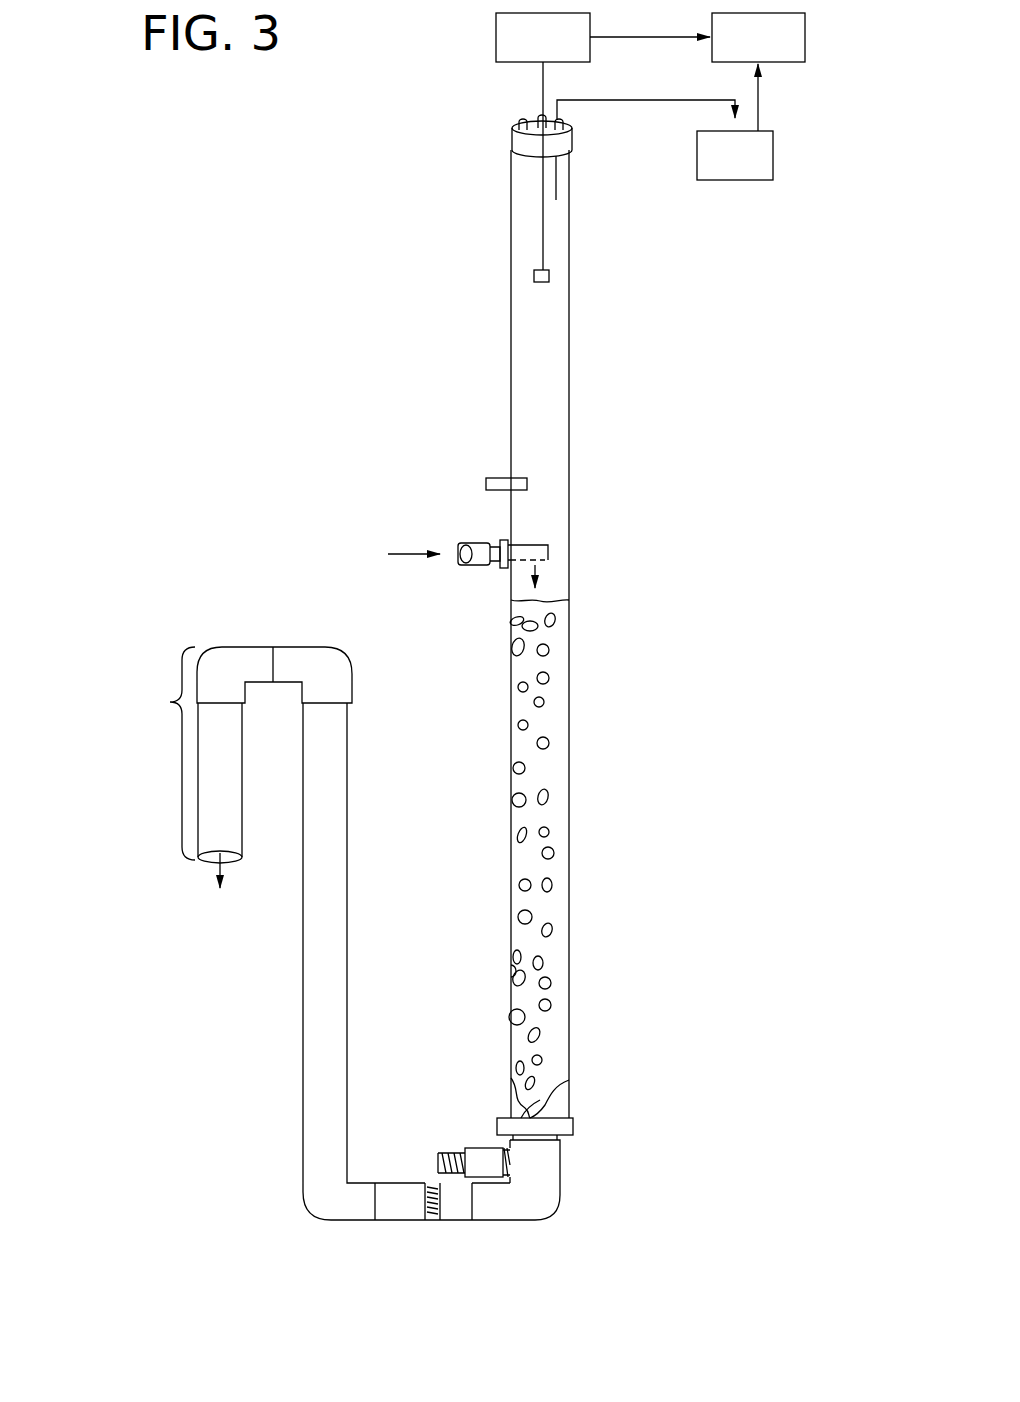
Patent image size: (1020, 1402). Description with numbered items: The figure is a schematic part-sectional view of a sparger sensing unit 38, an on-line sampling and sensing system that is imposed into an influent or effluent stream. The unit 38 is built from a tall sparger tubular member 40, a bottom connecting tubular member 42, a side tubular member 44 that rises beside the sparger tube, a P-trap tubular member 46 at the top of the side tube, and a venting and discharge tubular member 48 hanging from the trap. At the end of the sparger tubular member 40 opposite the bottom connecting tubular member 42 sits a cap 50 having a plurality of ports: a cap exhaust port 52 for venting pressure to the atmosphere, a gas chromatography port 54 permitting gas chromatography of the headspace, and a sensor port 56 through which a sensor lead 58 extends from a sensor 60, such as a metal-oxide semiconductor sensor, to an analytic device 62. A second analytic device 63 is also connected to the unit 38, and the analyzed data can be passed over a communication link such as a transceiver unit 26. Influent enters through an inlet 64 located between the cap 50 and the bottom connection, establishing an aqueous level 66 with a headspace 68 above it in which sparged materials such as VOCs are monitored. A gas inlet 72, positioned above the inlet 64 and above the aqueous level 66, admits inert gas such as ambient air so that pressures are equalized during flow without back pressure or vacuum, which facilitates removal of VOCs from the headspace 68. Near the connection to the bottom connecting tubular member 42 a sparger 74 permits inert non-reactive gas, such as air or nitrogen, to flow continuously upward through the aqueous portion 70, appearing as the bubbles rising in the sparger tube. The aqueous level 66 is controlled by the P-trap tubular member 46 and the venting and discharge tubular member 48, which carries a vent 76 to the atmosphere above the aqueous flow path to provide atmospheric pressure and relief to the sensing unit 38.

The transceiver unit 26 is at (746, 51).
The sparger sensing unit 38 is at (338, 340).
The sparger tubular member 40 is at (569, 757).
The bottom connecting tubular member 42 is at (432, 1227).
The side tubular member 44 is at (349, 891).
The P-trap tubular member 46 is at (205, 637).
The venting and discharge tubular member 48 is at (243, 790).
The cap 50 is at (572, 138).
The cap exhaust port 52 is at (513, 127).
The gas chromatography port 54 is at (662, 100).
The sensor port 56 is at (543, 112).
The sensor lead 58 is at (543, 218).
The sensor 60 is at (549, 275).
The analytic device 62 is at (531, 51).
The analytic device 63 is at (723, 169).
The inlet 64 is at (449, 540).
The aqueous level 66 is at (548, 600).
The headspace 68 is at (551, 386).
The aqueous portion 70 is at (558, 830).
The gas inlet 72 is at (474, 483).
The sparger 74 is at (467, 1131).
The vent 76 is at (170, 702).